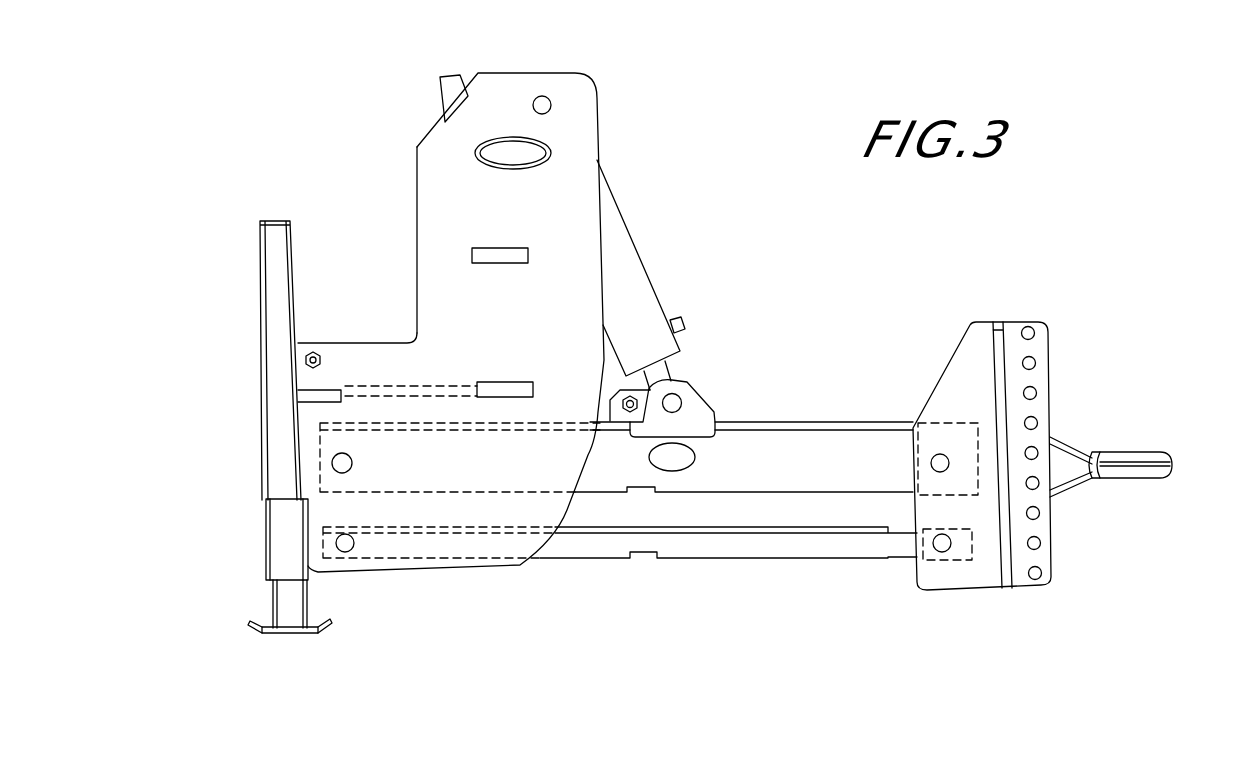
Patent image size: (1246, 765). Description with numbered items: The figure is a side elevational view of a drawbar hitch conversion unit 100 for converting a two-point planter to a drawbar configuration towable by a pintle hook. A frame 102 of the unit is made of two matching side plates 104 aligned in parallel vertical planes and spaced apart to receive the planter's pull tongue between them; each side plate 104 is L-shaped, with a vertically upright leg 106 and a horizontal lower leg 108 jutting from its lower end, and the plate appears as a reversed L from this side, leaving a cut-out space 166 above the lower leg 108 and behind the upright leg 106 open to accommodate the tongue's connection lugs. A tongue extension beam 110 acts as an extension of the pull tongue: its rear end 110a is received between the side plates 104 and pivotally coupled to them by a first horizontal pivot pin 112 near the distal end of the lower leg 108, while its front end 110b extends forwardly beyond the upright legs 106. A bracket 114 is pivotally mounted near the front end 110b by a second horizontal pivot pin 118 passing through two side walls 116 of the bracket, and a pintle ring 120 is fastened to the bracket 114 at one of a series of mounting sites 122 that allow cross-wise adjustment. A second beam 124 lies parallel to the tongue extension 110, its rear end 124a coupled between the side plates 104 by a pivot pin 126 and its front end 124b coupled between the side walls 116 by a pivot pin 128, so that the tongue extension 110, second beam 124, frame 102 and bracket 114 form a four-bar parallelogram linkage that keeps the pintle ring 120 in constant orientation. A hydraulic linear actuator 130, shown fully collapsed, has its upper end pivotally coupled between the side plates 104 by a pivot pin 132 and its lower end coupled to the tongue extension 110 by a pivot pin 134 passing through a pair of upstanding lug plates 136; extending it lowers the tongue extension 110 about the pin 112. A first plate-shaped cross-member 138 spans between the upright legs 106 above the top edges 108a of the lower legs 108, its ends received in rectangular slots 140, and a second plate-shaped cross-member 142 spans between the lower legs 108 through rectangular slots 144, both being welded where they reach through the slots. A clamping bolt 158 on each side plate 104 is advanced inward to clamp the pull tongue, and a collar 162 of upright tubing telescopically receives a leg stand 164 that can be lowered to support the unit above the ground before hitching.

The drawbar hitch conversion unit 100 is at (819, 113).
The frame 102 is at (602, 61).
The side plate 104 is at (586, 190).
The upright leg 106 is at (447, 200).
The lower leg 108 is at (396, 358).
The top edge of lower leg 108a is at (376, 322).
The tongue extension beam 110 is at (818, 438).
The rear end of tongue extension 110a is at (320, 458).
The front end of tongue extension 110b is at (1050, 427).
The first horizontal pivot pin 112 is at (353, 465).
The bracket 114 is at (950, 379).
The side wall of bracket 116 is at (948, 407).
The second horizontal pivot pin 118 is at (931, 465).
The pintle ring 120 is at (1142, 455).
The mounting sites 122 is at (1035, 333).
The second beam 124 is at (700, 553).
The rear end of second beam 124a is at (322, 545).
The front end of second beam 124b is at (977, 543).
The horizontal pivot pin 126 is at (350, 553).
The horizontal pivot pin 128 is at (943, 553).
The hydraulic linear actuator 130 is at (636, 266).
The horizontal pivot pin 132 is at (537, 96).
The horizontal pivot pin 134 is at (680, 390).
The lug plates 136 is at (693, 412).
The first plate-shaped cross-member 138 is at (494, 256).
The rectangular slots 140 is at (514, 247).
The second plate-shaped cross-member 142 is at (432, 390).
The rectangular slots 144 is at (510, 380).
The clamping bolt 158 is at (313, 350).
The collar 162 is at (277, 532).
The leg stand 164 is at (268, 280).
The cut-out space 166 is at (351, 268).